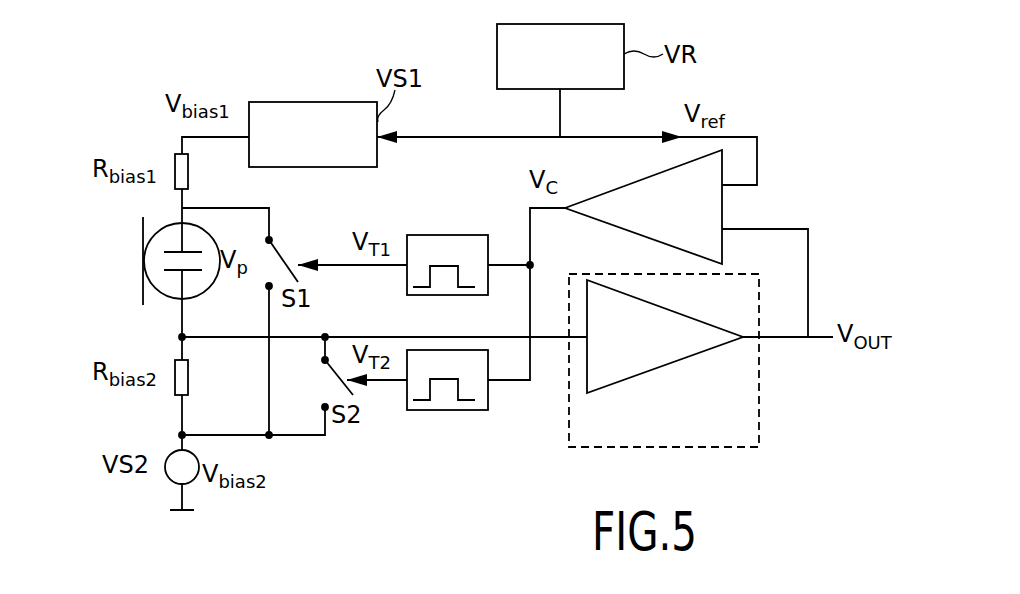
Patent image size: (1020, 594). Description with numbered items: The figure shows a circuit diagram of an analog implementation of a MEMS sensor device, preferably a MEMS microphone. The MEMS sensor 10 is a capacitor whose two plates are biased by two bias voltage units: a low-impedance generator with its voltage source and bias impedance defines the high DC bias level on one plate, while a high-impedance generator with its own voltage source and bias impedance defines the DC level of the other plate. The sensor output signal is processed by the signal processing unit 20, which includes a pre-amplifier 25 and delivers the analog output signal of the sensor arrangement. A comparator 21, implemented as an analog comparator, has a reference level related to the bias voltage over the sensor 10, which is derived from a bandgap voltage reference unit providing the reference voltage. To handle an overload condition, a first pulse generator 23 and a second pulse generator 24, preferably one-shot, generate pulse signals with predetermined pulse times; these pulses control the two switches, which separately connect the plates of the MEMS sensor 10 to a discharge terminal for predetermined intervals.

The MEMS sensor 10 is at (143, 273).
The signal processing unit 20 is at (760, 432).
The comparator 21 is at (598, 220).
The first pulse generator 23 is at (470, 235).
The second pulse generator 24 is at (462, 410).
The pre-amplifier 25 is at (690, 358).